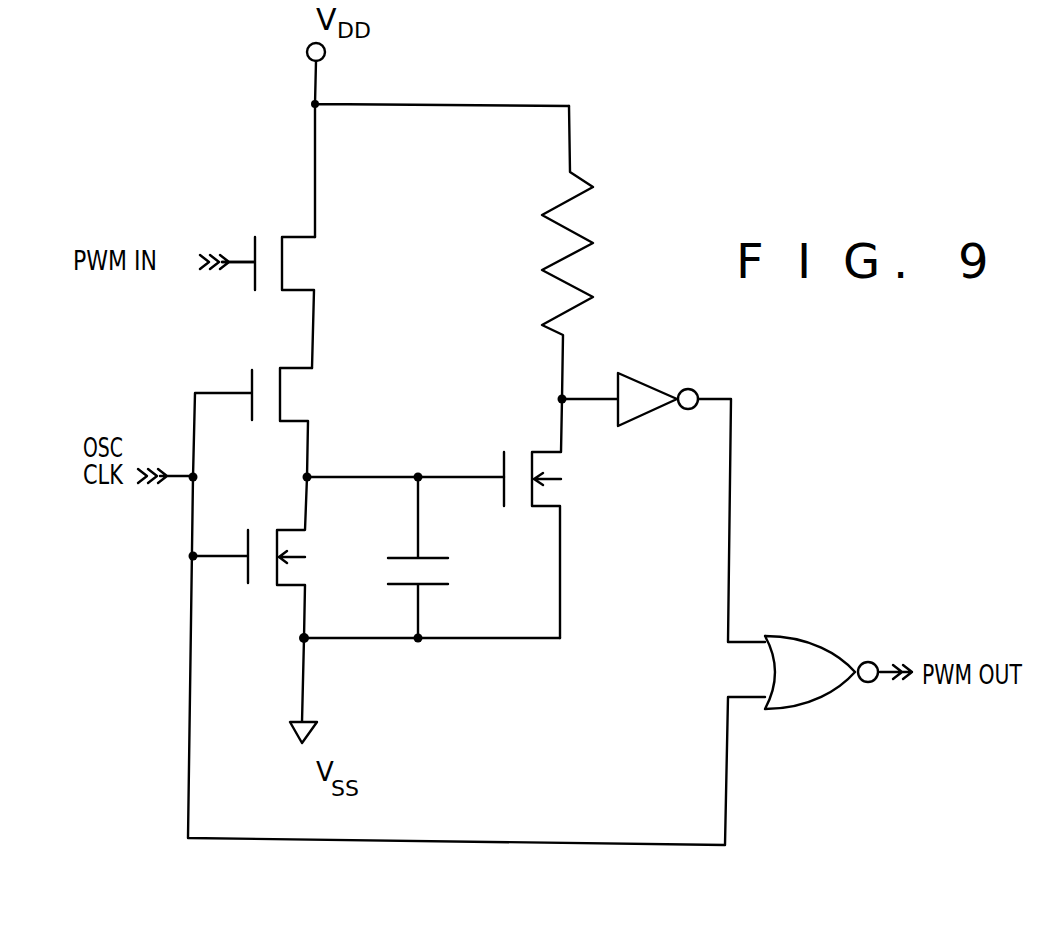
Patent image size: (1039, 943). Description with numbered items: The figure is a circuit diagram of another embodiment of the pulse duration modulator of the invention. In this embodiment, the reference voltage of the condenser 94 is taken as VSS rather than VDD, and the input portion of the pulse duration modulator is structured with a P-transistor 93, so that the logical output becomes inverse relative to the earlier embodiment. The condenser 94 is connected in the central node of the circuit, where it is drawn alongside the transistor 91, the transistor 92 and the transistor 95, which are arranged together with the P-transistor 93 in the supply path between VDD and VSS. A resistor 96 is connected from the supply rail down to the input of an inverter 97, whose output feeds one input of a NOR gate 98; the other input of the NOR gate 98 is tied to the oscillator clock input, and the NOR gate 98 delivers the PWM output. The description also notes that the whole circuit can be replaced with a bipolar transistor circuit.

The transistor (discharge switch) 91 is at (275, 598).
The transistor (sampling switch) 92 is at (316, 397).
The P-transistor 93 is at (316, 263).
The condenser 94 is at (375, 567).
The transistor 95 is at (575, 486).
The resistor 96 is at (605, 218).
The inverter 97 is at (650, 383).
The NOR gate 98 is at (811, 658).